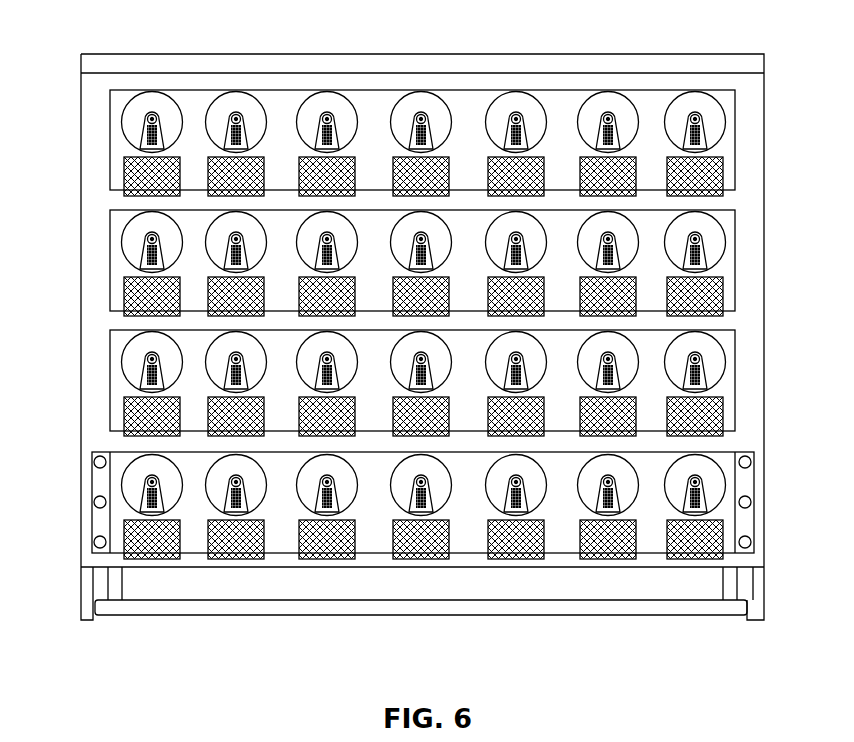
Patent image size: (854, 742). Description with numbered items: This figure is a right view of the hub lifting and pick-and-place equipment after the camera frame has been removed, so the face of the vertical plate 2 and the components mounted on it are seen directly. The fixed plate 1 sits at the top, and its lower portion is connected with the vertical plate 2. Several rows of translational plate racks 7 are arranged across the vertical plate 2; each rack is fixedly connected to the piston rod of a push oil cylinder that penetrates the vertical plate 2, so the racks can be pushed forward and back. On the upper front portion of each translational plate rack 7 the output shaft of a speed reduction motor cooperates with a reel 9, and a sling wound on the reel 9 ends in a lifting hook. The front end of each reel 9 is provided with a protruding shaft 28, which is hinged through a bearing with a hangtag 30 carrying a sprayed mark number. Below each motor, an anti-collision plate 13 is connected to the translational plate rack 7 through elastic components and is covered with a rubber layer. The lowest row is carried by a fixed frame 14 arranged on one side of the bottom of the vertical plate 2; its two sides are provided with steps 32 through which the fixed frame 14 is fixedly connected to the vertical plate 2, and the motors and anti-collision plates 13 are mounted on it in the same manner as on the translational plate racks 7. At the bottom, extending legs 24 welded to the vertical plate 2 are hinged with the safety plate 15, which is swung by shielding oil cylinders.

The fixed plate 1 is at (101, 63).
The vertical plate 2 is at (138, 79).
The translational plate rack 7 is at (193, 105).
The reel 9 is at (247, 107).
The anti-collision plate 13 is at (441, 165).
The fixed frame 14 is at (466, 520).
The safety plate 15 is at (155, 605).
The extending leg 24 is at (84, 612).
The protruding shaft 28 is at (324, 119).
The hangtag 30 is at (337, 130).
The step 32 is at (747, 480).